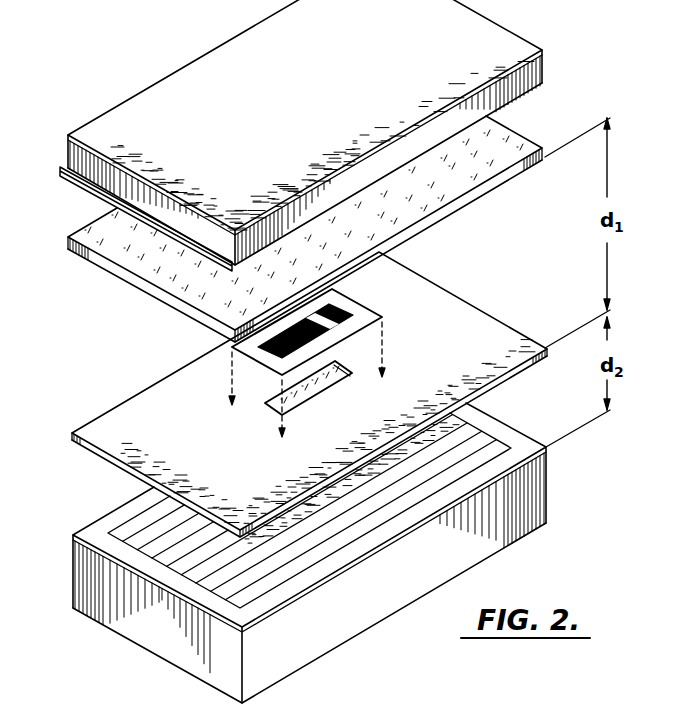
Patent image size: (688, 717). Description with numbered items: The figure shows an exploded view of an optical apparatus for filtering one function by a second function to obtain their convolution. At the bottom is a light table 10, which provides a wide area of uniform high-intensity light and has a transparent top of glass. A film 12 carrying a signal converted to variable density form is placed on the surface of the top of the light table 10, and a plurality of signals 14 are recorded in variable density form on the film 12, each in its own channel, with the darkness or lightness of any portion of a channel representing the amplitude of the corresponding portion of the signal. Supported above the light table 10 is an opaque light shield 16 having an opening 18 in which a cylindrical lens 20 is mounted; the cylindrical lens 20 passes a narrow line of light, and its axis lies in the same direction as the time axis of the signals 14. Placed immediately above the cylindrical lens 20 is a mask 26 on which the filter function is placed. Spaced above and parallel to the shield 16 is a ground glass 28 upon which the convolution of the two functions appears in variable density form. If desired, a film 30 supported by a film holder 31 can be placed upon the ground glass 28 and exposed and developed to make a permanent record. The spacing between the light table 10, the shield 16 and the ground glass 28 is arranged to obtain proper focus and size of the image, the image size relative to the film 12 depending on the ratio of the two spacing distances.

The light table 10 is at (491, 556).
The film 12 is at (476, 435).
The signals 14 is at (407, 487).
The opaque light shield 16 is at (508, 368).
The opening 18 is at (337, 368).
The cylindrical lens 20 is at (300, 398).
The mask 26 is at (343, 295).
The ground glass 28 is at (515, 133).
The film 30 is at (60, 171).
The film holder 31 is at (135, 93).